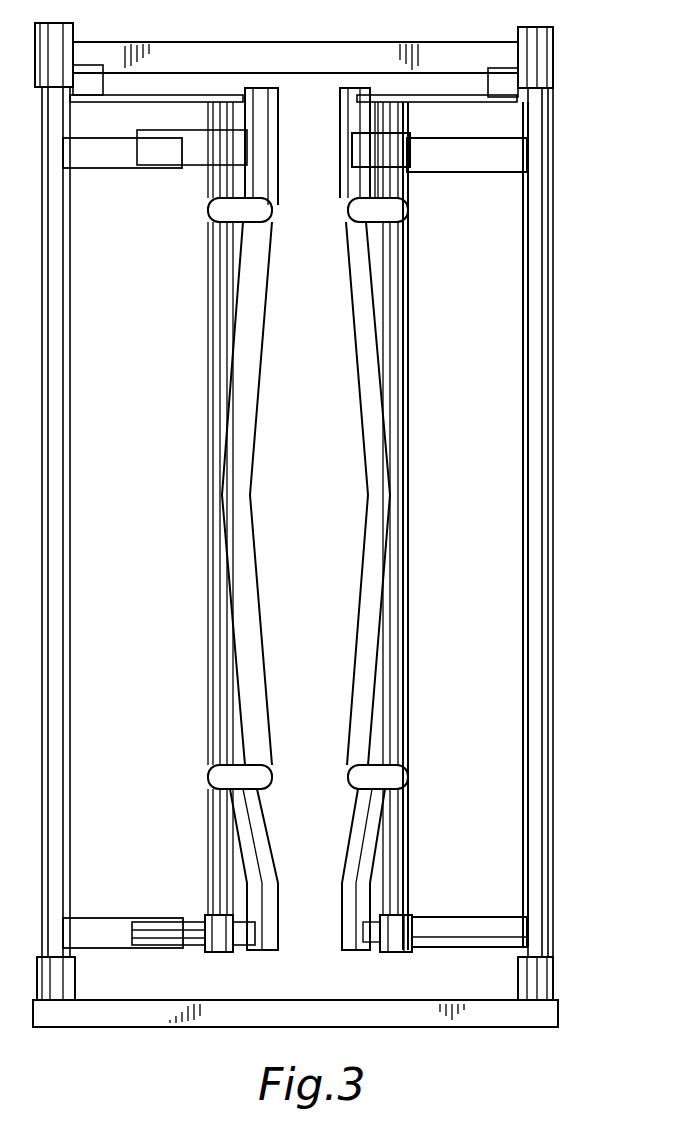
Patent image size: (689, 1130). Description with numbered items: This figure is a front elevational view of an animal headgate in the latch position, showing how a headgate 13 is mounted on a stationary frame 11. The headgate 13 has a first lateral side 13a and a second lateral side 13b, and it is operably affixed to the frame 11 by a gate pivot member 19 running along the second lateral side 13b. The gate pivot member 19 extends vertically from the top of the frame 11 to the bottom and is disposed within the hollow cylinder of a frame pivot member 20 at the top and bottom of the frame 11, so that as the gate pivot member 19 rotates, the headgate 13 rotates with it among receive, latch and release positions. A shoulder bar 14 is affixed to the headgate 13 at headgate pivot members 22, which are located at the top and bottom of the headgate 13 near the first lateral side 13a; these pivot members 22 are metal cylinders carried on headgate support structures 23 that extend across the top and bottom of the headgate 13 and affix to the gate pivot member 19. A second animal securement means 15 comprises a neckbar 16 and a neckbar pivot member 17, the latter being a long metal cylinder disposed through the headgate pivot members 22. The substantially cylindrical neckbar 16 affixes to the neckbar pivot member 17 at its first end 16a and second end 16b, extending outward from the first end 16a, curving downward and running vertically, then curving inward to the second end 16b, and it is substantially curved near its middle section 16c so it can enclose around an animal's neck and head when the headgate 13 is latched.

The stationary frame 11 is at (285, 48).
The headgate 13 is at (507, 548).
The first lateral side 13a is at (418, 412).
The second lateral side 13b is at (518, 848).
The shoulder bar 14 is at (350, 118).
The second animal securement means 15 is at (343, 481).
The neckbar 16 is at (343, 493).
The first end 16a is at (407, 214).
The second end 16b is at (400, 782).
The middle section 16c is at (368, 490).
The neckbar pivot member 17 is at (398, 182).
The gate pivot member 19 is at (540, 333).
The frame pivot member 20 is at (548, 52).
The headgate pivot member 22 is at (388, 150).
The headgate support structure 23 is at (512, 155).